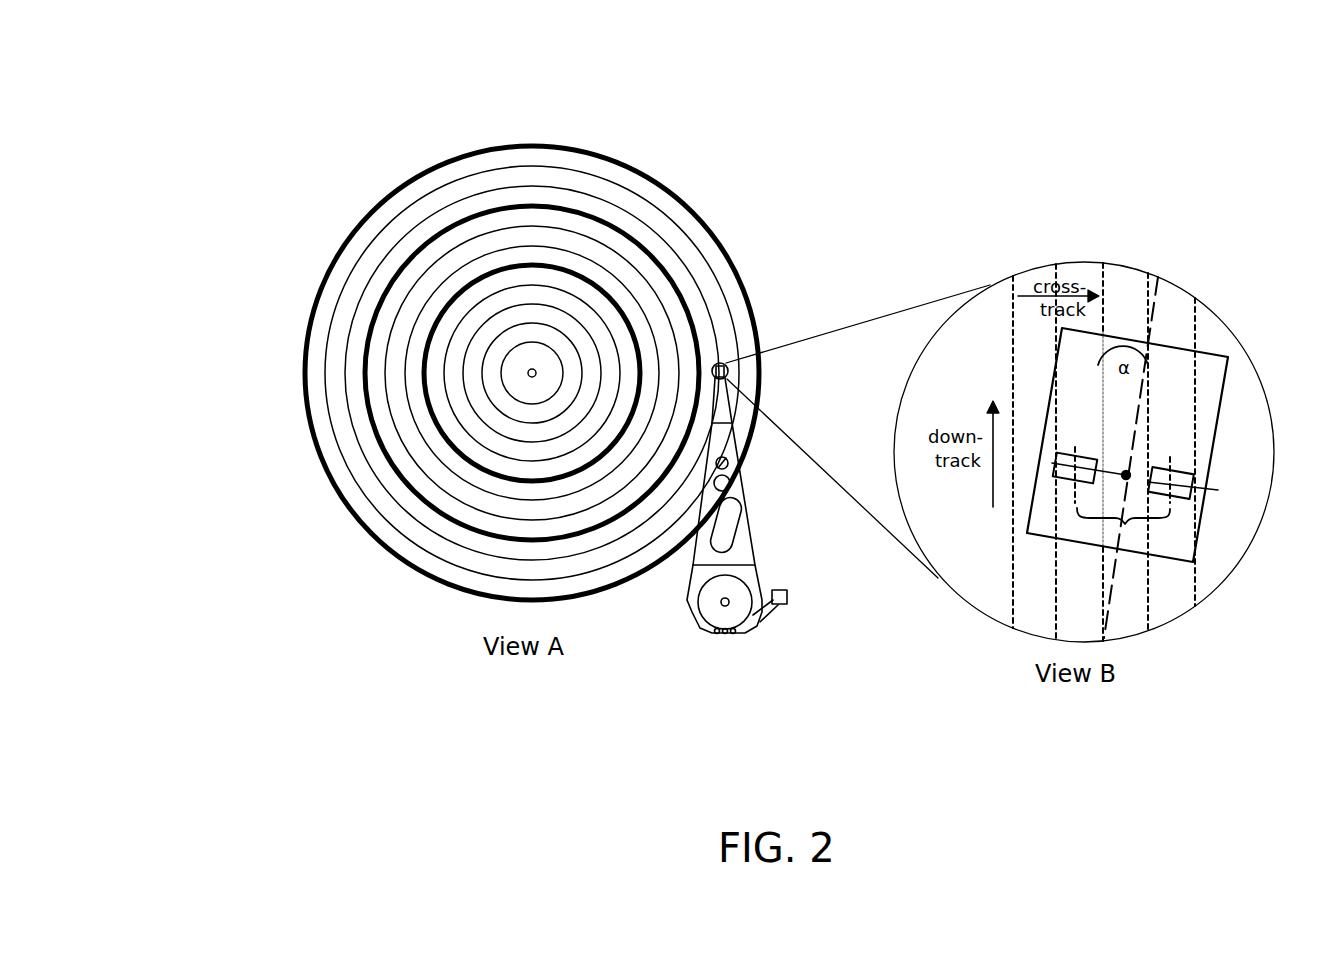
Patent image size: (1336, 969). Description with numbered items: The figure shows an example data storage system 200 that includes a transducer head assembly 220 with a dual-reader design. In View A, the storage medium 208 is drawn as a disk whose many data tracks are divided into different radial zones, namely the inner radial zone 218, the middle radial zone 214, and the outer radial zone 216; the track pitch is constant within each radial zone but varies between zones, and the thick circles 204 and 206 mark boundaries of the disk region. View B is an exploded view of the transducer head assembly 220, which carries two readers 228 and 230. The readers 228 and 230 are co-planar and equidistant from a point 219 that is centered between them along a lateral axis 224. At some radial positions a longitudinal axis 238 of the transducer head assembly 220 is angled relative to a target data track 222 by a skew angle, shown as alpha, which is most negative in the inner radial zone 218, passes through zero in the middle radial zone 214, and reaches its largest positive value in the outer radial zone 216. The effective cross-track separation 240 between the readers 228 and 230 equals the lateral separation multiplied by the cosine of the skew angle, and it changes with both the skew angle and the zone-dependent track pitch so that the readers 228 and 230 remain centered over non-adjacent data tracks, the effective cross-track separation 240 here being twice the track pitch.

The data storage system 200 is at (290, 123).
The disk 204 is at (502, 370).
The disk outer edge 206 is at (305, 392).
The storage medium 208 is at (368, 215).
The radial zone 214 is at (555, 265).
The radial zone 216 is at (498, 207).
The radial zone 218 is at (532, 342).
The point 219 is at (1126, 475).
The transducer head assembly 220 is at (727, 363).
The target data track 222 is at (1103, 581).
The lateral axis 224 is at (1040, 458).
The reader 228 is at (1092, 456).
The reader 230 is at (1200, 492).
The longitudinal axis 238 is at (1110, 583).
The effective cross-track separation 240 is at (1125, 524).